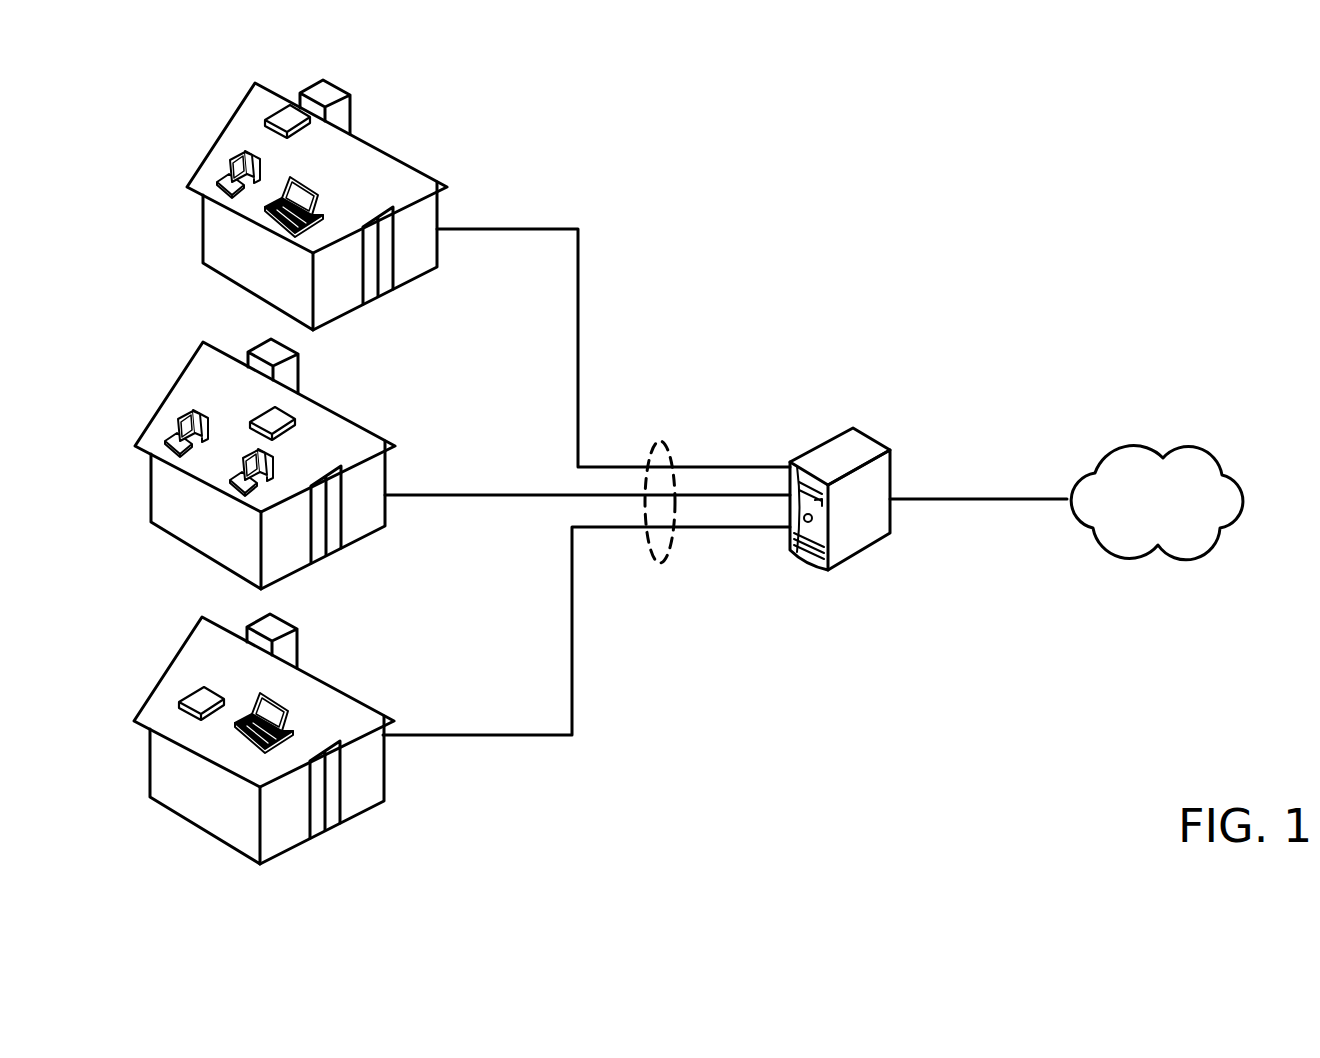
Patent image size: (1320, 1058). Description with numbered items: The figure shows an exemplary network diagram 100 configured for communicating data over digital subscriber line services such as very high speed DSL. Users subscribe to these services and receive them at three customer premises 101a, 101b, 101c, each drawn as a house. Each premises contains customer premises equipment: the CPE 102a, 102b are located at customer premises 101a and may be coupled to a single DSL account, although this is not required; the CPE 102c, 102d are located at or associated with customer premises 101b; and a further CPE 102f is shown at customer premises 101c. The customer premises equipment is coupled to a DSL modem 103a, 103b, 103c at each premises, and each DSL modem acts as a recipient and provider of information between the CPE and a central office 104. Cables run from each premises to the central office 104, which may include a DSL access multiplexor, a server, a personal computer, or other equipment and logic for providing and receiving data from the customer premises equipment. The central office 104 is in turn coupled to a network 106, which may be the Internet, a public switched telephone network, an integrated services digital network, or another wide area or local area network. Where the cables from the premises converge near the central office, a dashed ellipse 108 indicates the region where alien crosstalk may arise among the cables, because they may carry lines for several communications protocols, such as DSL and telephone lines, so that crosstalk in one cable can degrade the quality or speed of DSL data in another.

The network diagram 100 is at (1042, 263).
The customer premises 101a is at (440, 183).
The customer premises 101b is at (298, 367).
The customer premises 101c is at (297, 633).
The customer premises equipment 102a is at (237, 152).
The customer premises equipment 102b is at (307, 183).
The customer premises equipment 102c is at (187, 412).
The customer premises equipment 102d is at (262, 452).
The customer premises equipment 102f is at (280, 702).
The DSL modem 103a is at (282, 110).
The DSL modem 103b is at (280, 430).
The DSL modem 103c is at (193, 690).
The central office 104 is at (852, 428).
The network 106 is at (1133, 445).
The ellipse 108 is at (662, 442).